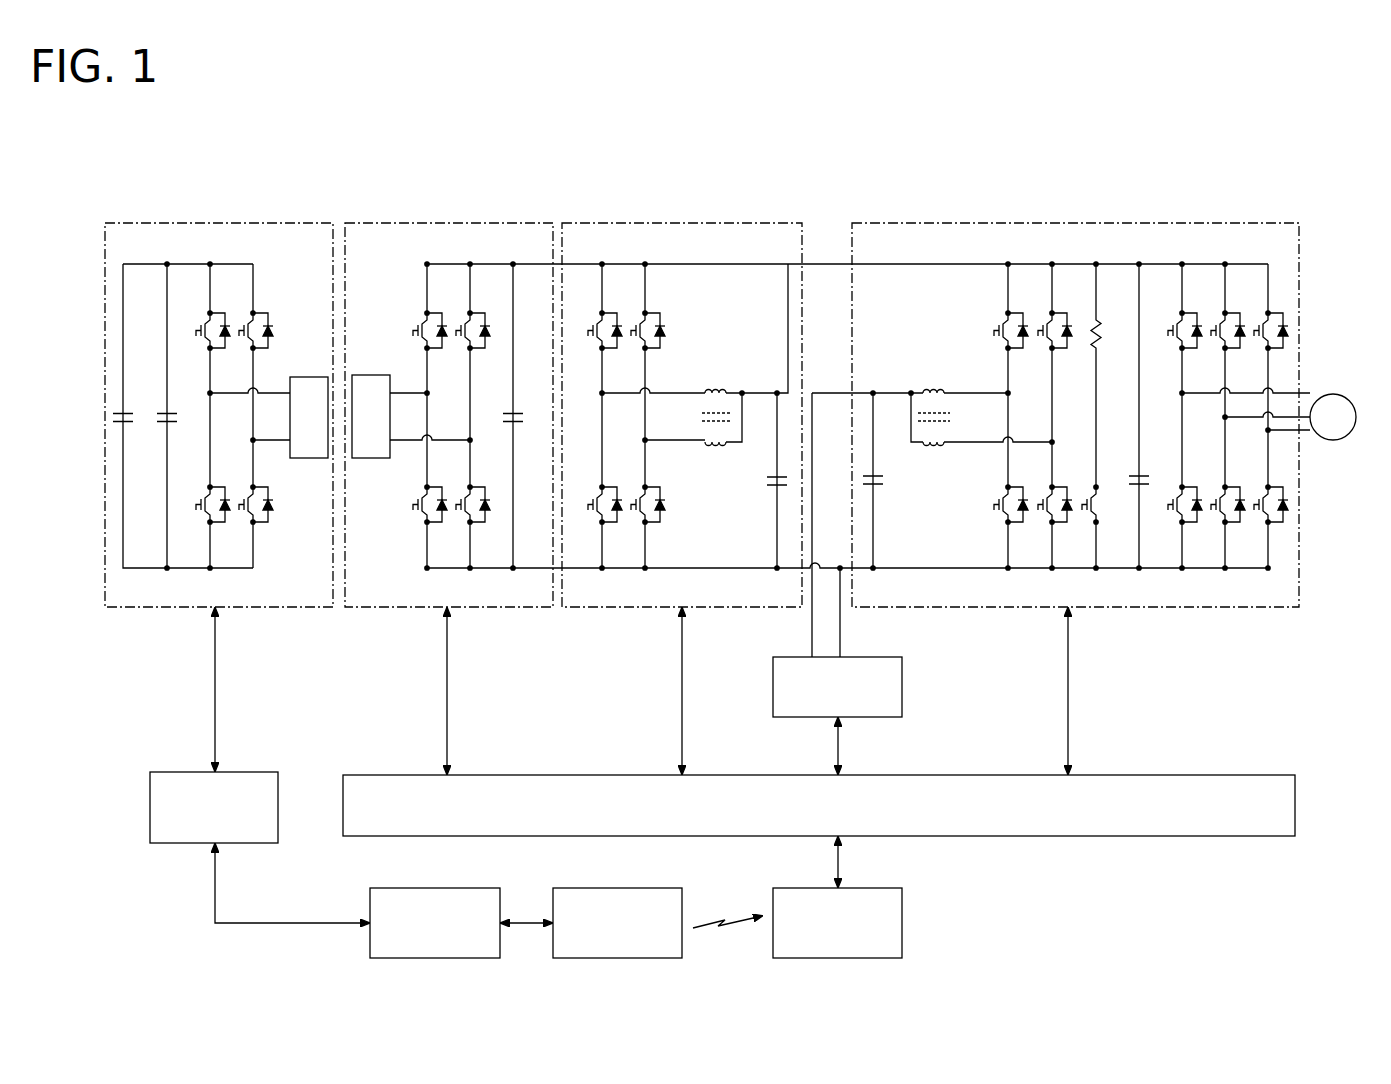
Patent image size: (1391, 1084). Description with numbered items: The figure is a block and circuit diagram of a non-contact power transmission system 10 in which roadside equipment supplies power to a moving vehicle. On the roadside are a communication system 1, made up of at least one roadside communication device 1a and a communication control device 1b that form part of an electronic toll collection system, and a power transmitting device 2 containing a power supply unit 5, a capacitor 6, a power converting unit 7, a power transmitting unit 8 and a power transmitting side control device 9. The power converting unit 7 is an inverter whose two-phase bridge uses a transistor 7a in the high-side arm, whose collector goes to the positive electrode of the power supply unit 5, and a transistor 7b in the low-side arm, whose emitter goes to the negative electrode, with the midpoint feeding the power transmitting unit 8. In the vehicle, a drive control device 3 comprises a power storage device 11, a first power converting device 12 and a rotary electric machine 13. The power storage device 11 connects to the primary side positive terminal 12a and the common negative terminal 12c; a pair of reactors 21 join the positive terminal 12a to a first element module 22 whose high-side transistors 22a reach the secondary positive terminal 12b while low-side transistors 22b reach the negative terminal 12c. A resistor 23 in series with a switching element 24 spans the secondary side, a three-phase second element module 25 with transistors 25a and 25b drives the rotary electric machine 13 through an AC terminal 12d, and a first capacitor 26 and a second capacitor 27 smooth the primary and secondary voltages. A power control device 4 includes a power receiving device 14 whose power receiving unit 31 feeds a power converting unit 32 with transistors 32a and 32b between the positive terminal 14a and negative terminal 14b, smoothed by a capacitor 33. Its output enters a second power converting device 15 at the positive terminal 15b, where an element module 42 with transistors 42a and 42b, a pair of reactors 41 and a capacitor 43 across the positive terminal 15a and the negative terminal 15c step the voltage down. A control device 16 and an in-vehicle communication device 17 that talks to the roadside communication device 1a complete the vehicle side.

The communication system 1 is at (670, 880).
The roadside communication device 1a is at (625, 888).
The communication control device 1b is at (445, 888).
The power transmitting device 2 is at (297, 224).
The drive control device 3 is at (1296, 220).
The power control device 4 is at (774, 176).
The power supply unit 5 is at (125, 415).
The capacitor 6 is at (168, 415).
The power converting unit 7 is at (226, 401).
The transistor in high-side arm 7a is at (210, 313).
The transistor in low-side arm 7b is at (210, 522).
The power transmitting unit 8 is at (310, 377).
The power transmitting side control device 9 is at (262, 772).
The non-contact power transmission system 10 is at (1320, 148).
The power storage device 11 is at (902, 687).
The first power converting device 12 is at (1299, 238).
The positive terminal on primary side 12a is at (873, 393).
The positive terminal on secondary side 12b is at (1139, 262).
The negative terminal 12c is at (873, 568).
The AC terminal 12d is at (1182, 393).
The rotary electric machine 13 is at (1333, 394).
The power receiving device 14 is at (536, 225).
The positive terminal on secondary side 14a is at (513, 262).
The negative terminal on secondary side 14b is at (513, 568).
The second power converting device 15 is at (733, 224).
The positive terminal on secondary side 15a is at (786, 385).
The positive terminal on primary side 15b is at (602, 262).
The negative terminal 15c is at (777, 568).
The control device 16 is at (1258, 775).
The in-vehicle communication device 17 is at (902, 918).
The pair of reactors 21 is at (935, 440).
The first element module 22 is at (1052, 262).
The transistor in high-side arm 22a is at (1008, 313).
The transistor in low-side arm 22b is at (1008, 522).
The resistor 23 is at (1096, 318).
The switching element 24 is at (1096, 487).
The second element module 25 is at (1225, 262).
The transistor in high-side arm 25a is at (1182, 313).
The transistor in low-side arm 25b is at (1182, 522).
The first capacitor 26 is at (880, 485).
The second capacitor 27 is at (1140, 475).
The power receiving unit 31 is at (372, 375).
The power converting unit 32 is at (428, 262).
The transistor in high-side arm 32a is at (427, 313).
The transistor in low-side arm 32b is at (470, 487).
The capacitor 33 is at (515, 415).
The pair of reactors 41 is at (710, 410).
The element module 42 is at (650, 230).
The transistor in high-side arm 42a is at (602, 313).
The transistor in low-side arm 42b is at (602, 522).
The capacitor 43 is at (777, 475).